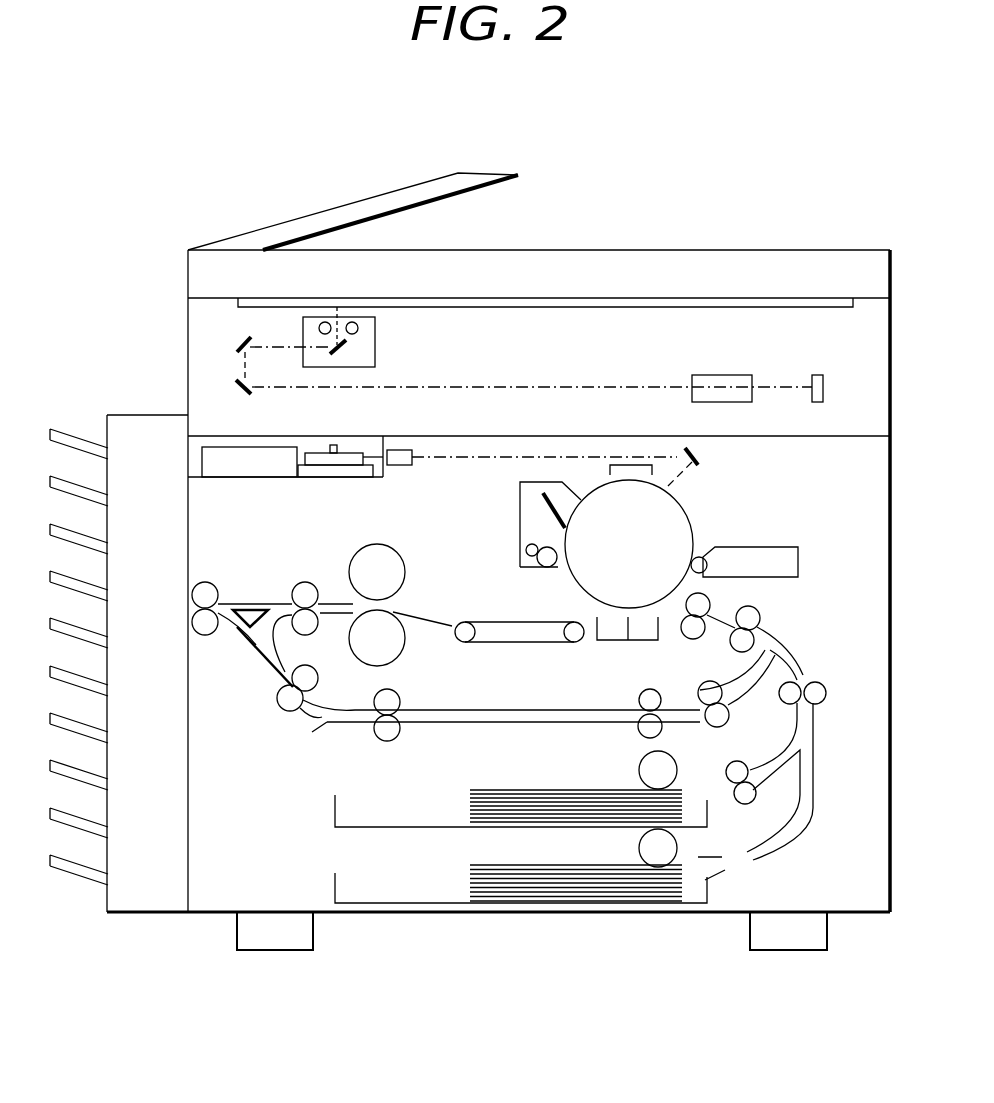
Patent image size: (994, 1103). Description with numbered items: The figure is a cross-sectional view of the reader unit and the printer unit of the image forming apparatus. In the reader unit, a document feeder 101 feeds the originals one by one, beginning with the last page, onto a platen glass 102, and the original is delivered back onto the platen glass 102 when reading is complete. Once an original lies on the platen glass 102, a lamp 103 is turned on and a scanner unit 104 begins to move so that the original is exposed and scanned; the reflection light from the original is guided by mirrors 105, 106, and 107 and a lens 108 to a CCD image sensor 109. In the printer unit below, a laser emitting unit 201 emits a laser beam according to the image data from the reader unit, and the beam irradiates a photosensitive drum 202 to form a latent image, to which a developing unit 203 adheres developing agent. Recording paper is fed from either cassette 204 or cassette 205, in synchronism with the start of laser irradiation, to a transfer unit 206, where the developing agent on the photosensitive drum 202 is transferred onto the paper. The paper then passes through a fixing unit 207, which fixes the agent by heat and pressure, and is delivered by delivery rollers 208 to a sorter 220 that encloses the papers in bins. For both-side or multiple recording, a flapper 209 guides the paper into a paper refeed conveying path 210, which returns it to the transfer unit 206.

The document feeder 101 is at (303, 221).
The platen glass 102 is at (766, 300).
The lamp 103 is at (352, 321).
The scanner unit 104 is at (378, 328).
The mirror 105 is at (350, 352).
The mirror 106 is at (238, 341).
The mirror 107 is at (240, 390).
The lens 108 is at (730, 373).
The CCD image sensor 109 is at (821, 374).
The laser emitting unit 201 is at (345, 456).
The photosensitive drum 202 is at (688, 510).
The developing unit 203 is at (800, 563).
The cassette 204 is at (598, 800).
The cassette 205 is at (683, 876).
The transfer unit 206 is at (625, 641).
The fixing unit 207 is at (395, 626).
The delivery rollers 208 is at (207, 620).
The flapper 209 is at (242, 637).
The paper refeed conveying path 210 is at (453, 718).
The sorter 220 is at (148, 898).